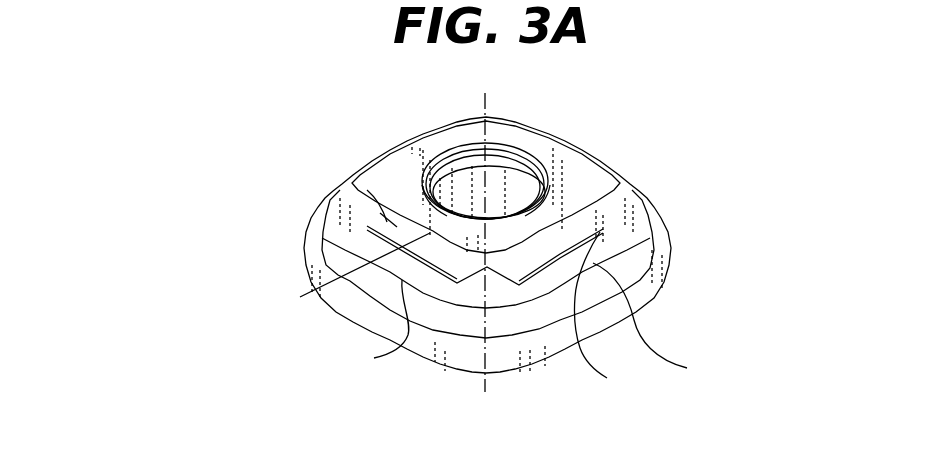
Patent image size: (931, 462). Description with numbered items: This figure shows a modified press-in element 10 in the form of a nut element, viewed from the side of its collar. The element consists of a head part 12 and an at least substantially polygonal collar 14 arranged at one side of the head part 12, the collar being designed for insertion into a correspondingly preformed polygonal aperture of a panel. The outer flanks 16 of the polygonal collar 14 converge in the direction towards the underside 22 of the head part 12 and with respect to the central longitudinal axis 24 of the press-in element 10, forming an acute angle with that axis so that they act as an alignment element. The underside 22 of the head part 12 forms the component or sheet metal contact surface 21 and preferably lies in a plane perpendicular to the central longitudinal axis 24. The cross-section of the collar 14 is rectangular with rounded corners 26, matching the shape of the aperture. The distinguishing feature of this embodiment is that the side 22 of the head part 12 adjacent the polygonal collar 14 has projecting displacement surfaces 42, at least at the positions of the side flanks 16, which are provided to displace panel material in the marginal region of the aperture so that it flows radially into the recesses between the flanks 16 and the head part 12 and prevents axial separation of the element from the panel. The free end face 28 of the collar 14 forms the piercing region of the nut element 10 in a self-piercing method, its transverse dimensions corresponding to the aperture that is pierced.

The press-in element 10 is at (740, 172).
The head part 12 is at (367, 300).
The polygonal collar 14 is at (503, 118).
The outer flanks 16 is at (300, 297).
The sheet metal contact surface 21 is at (633, 192).
The underside of the head part 22 is at (662, 329).
The central longitudinal axis 24 is at (457, 101).
The rounded corners 26 is at (390, 180).
The free end face of the collar 28 is at (563, 173).
The displacement surfaces 42 is at (492, 318).